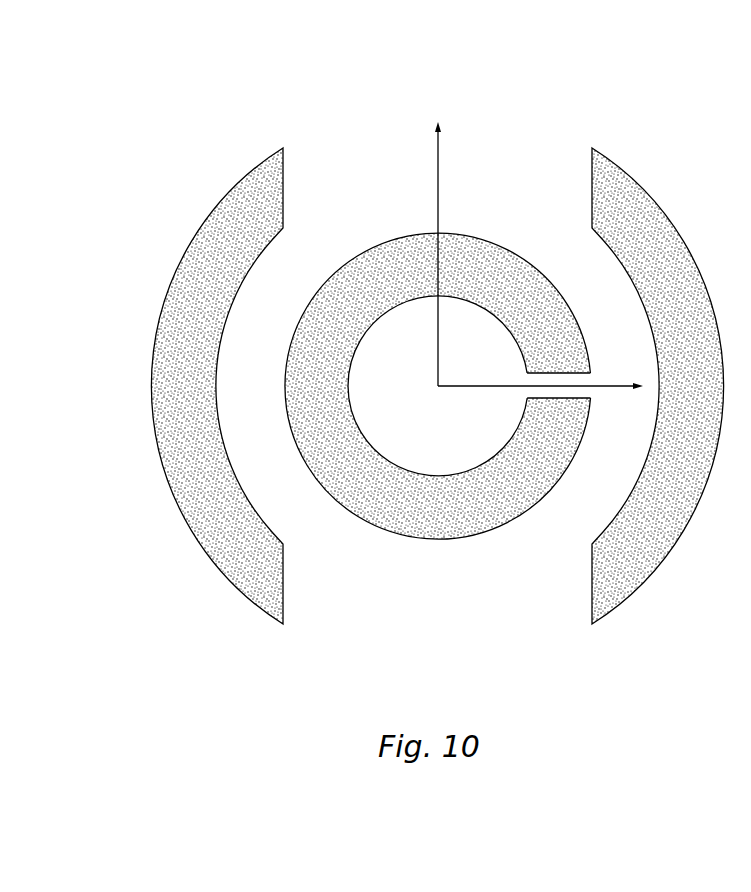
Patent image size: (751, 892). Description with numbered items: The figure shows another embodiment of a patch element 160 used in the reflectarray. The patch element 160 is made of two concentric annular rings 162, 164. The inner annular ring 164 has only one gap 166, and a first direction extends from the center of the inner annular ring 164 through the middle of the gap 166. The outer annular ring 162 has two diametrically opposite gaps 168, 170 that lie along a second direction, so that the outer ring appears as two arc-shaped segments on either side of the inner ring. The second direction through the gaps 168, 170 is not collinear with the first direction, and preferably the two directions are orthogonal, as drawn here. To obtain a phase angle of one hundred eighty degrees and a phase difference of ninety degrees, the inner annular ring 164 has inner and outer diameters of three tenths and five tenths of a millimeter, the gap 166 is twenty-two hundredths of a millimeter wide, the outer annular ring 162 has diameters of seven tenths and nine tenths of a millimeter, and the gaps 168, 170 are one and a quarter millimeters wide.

The patch element 160 is at (700, 50).
The outer annular ring 162 is at (195, 278).
The inner annular ring 164 is at (473, 257).
The gap 166 is at (580, 393).
The gap 168 is at (362, 628).
The gap 170 is at (363, 143).